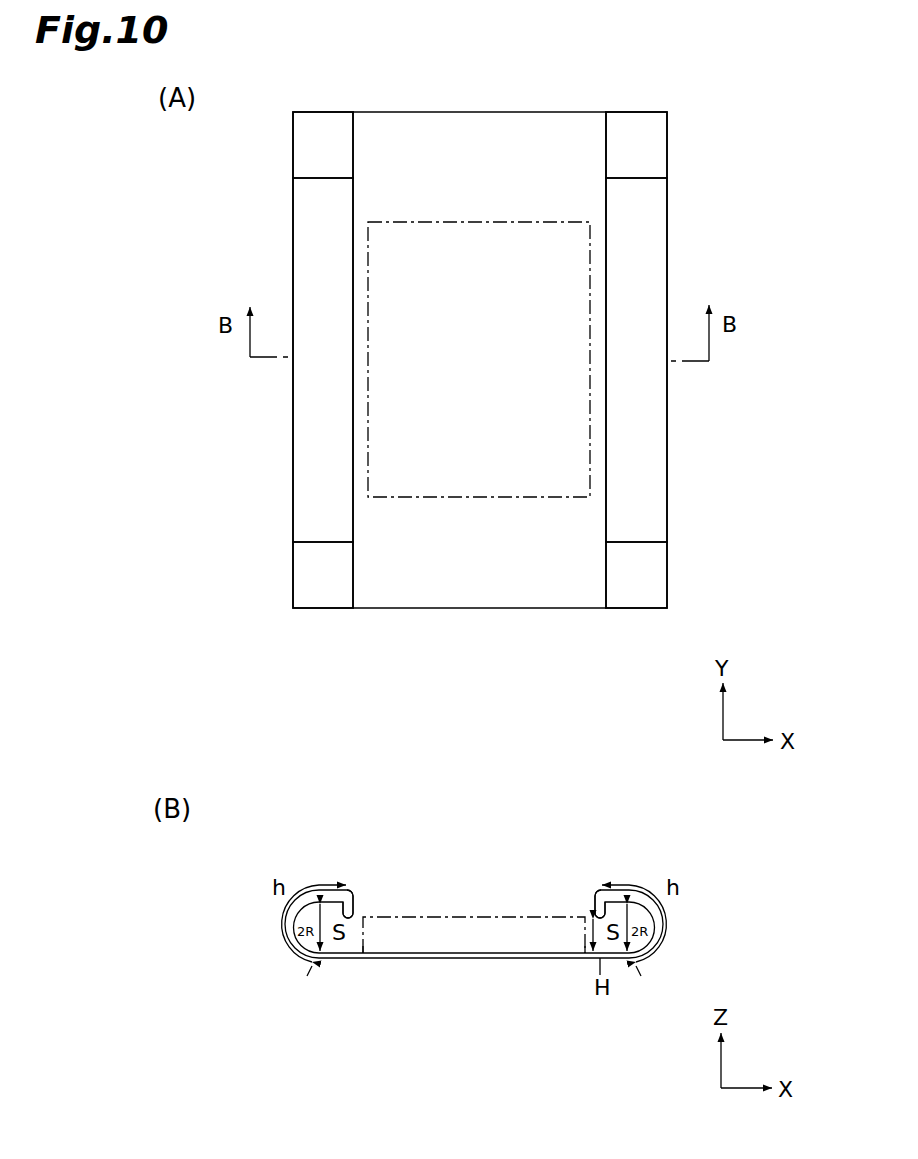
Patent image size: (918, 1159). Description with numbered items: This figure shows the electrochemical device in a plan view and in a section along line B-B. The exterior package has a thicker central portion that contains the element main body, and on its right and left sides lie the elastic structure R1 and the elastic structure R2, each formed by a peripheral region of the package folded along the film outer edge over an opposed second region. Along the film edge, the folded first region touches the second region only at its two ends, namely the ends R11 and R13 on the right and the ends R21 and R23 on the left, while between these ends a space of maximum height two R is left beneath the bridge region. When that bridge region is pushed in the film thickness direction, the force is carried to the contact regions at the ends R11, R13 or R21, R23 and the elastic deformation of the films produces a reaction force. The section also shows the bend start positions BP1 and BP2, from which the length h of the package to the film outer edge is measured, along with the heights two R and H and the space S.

The elastic structure R1 is at (658, 482).
The elastic structure R2 is at (297, 482).
The end of the first region R11 is at (655, 580).
The end of the first region R13 is at (658, 152).
The end of the first region R21 is at (305, 582).
The end of the first region R23 is at (305, 160).
The bend start position BP1 is at (627, 963).
The bend start position BP2 is at (320, 965).